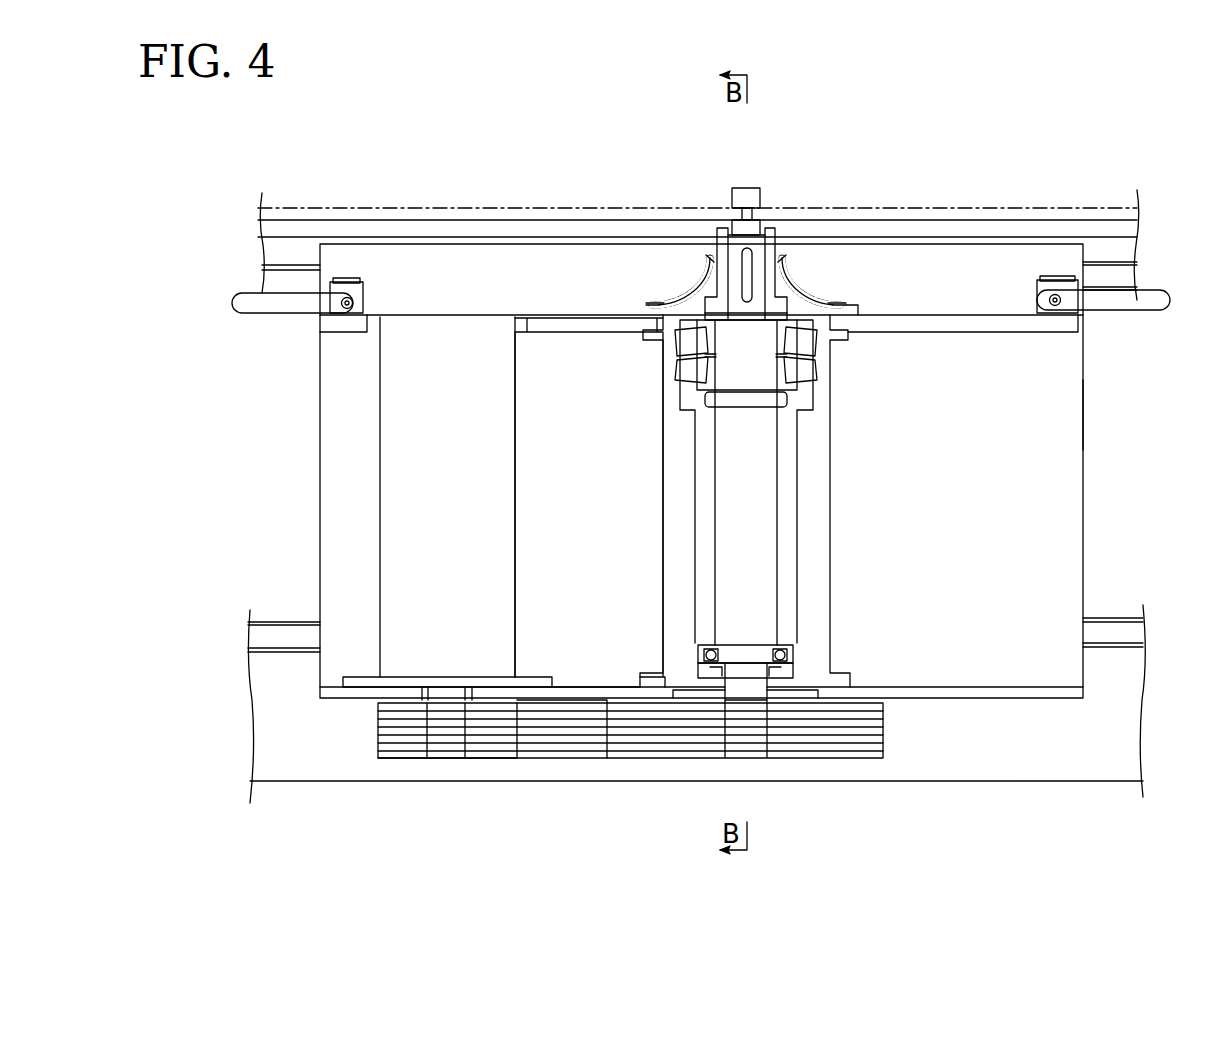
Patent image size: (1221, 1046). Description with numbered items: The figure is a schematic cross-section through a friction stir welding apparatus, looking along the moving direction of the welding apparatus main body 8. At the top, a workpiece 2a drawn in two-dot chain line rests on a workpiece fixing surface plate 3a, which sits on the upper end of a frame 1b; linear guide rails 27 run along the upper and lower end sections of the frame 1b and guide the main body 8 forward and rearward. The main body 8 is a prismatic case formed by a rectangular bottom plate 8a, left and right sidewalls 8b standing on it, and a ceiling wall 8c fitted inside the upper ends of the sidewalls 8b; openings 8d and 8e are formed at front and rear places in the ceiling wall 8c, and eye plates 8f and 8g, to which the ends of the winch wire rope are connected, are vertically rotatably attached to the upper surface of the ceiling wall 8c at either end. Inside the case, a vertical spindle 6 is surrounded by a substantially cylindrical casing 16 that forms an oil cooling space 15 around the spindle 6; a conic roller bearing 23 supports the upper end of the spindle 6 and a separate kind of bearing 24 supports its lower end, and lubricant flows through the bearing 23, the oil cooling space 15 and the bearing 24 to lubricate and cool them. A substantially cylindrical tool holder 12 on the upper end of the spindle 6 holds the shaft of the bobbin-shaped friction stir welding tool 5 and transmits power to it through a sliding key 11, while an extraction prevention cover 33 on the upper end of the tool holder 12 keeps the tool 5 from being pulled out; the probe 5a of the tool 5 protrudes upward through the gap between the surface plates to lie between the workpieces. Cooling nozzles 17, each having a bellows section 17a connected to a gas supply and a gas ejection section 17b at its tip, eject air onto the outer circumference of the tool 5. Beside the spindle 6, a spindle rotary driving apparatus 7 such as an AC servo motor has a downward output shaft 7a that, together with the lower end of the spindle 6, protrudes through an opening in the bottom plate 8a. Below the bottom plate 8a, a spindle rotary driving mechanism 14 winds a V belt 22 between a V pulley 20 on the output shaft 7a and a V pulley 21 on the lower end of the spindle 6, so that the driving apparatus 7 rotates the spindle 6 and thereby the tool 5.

The workpiece 2a is at (380, 208).
The workpiece fixing surface plate 3a is at (510, 208).
The friction stir welding tool 5 is at (752, 188).
The probe 5a is at (726, 214).
The extraction prevention cover 33 is at (720, 226).
The sliding key 11 is at (751, 248).
The tool holder 12 is at (778, 226).
The cooling nozzle 17 is at (652, 305).
The bellows section 17a is at (680, 280).
The gas ejection section 17b is at (708, 260).
The welding apparatus main body 8 is at (963, 242).
The bottom plate 8a is at (942, 690).
The sidewall 8b is at (1072, 415).
The ceiling wall 8c is at (1000, 322).
The opening 8d is at (850, 312).
The opening 8e is at (523, 318).
The eye plate 8f is at (243, 313).
The eye plate 8g is at (1162, 310).
The linear guide rail 27 is at (1097, 262).
The frame 1b is at (1013, 733).
The spindle rotary driving apparatus 7 is at (385, 440).
The output shaft 7a is at (418, 757).
The spindle 6 is at (770, 452).
The oil cooling space 15 is at (790, 497).
The casing 16 is at (815, 542).
The bearing 23 is at (818, 367).
The bearing 24 is at (790, 653).
The V pulley 20 is at (387, 760).
The V pulley 21 is at (650, 760).
The V belt 22 is at (560, 752).
The spindle rotary driving mechanism 14 is at (493, 760).